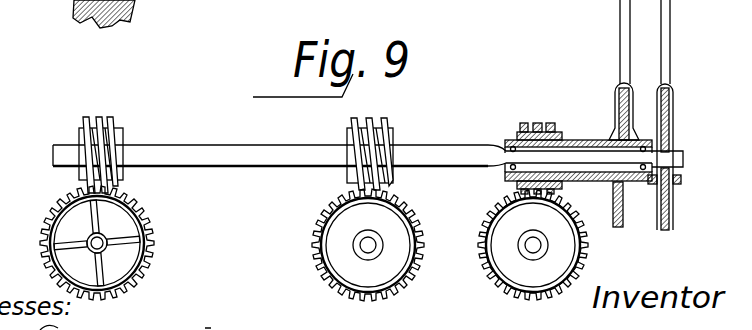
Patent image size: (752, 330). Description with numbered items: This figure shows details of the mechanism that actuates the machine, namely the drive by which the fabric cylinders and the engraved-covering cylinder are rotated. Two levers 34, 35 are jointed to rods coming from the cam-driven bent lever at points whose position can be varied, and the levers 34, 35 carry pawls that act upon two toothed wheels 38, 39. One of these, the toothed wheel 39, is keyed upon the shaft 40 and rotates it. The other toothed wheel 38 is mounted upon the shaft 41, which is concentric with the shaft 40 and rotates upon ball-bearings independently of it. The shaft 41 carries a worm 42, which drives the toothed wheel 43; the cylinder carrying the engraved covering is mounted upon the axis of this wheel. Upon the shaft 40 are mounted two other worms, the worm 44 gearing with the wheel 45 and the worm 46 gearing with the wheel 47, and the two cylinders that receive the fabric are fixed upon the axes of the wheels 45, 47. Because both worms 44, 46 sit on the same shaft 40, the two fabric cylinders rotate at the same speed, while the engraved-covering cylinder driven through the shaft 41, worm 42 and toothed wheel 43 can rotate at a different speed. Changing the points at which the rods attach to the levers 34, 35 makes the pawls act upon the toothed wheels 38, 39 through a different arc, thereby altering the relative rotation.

The lever 34 is at (665, 32).
The lever 35 is at (620, 30).
The toothed wheel 38 is at (620, 101).
The toothed wheel 39 is at (667, 117).
The shaft 40 is at (655, 179).
The shaft 41 is at (604, 142).
The worm 42 is at (566, 124).
The toothed wheel 43 is at (608, 237).
The worm 44 is at (407, 113).
The wheel 45 is at (423, 240).
The worm 46 is at (125, 103).
The wheel 47 is at (150, 223).